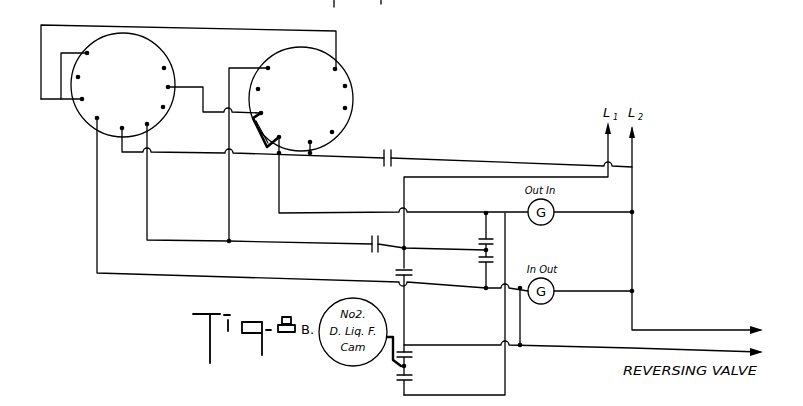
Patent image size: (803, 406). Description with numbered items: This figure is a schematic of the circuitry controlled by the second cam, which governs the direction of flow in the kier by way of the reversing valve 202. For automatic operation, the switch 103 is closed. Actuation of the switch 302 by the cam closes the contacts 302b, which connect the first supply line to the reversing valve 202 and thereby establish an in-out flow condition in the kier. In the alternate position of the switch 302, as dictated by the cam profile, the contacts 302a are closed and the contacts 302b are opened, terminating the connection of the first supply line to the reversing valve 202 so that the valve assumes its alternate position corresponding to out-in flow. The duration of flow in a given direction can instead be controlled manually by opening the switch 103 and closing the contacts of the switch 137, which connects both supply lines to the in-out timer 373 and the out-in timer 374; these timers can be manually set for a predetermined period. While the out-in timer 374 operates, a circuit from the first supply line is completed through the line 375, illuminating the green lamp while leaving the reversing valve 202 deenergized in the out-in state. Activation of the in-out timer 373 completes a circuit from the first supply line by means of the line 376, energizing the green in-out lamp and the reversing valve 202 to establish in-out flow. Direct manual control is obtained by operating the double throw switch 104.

The in-out timer 373 is at (152, 43).
The out-in timer 374 is at (350, 76).
The line 375 is at (341, 200).
The line 376 is at (264, 278).
The switch 137 is at (394, 166).
The switch 103 is at (412, 268).
The double throw switch 104 is at (492, 247).
The switch 302 is at (397, 371).
The contacts 302a is at (413, 378).
The contacts 302b is at (413, 355).
The reversing valve 202 is at (584, 345).